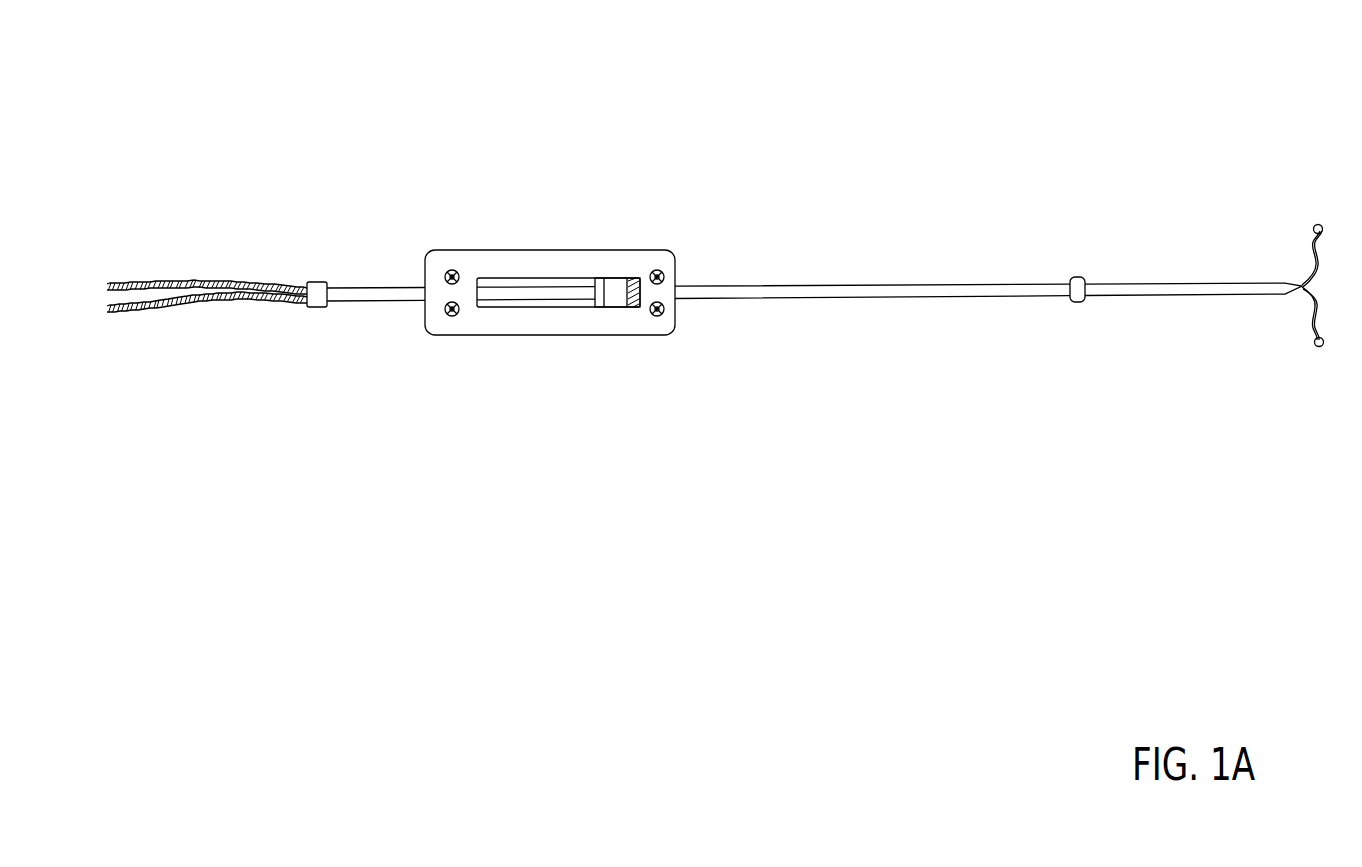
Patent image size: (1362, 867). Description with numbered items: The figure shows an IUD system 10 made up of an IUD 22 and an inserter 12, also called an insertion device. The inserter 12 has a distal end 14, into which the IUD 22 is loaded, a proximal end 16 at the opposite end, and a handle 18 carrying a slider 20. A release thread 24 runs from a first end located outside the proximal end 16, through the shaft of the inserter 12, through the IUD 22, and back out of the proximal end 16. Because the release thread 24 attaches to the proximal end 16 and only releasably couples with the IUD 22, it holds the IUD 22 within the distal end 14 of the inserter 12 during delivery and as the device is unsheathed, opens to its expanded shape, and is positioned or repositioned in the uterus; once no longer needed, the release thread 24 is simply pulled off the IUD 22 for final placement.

The IUD system 10 is at (962, 130).
The inserter 12 is at (820, 287).
The distal end 14 is at (1302, 283).
The proximal end 16 is at (320, 282).
The handle 18 is at (558, 250).
The slider 20 is at (618, 293).
The IUD 22 is at (1316, 218).
The release thread 24 is at (200, 302).